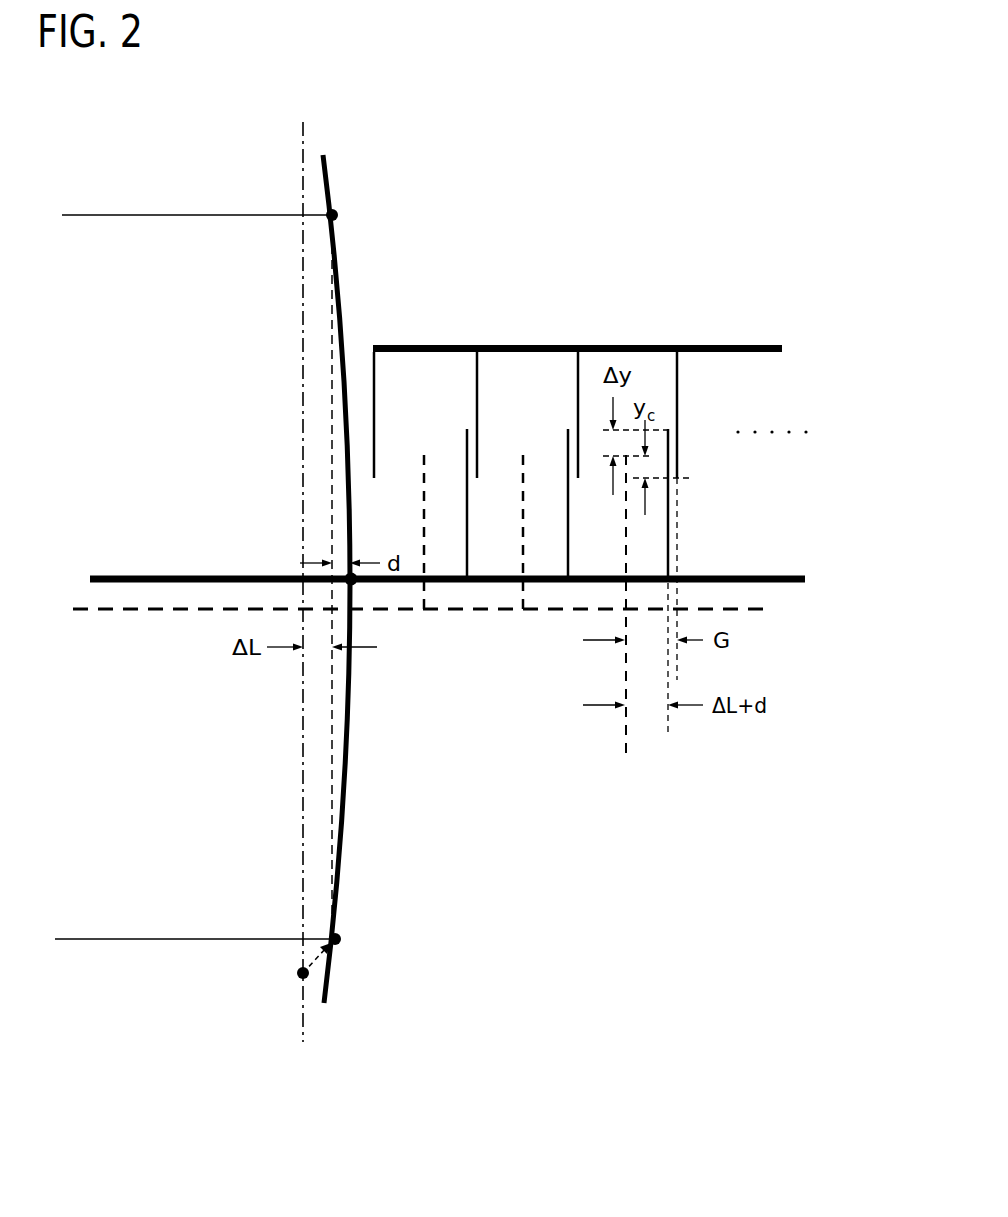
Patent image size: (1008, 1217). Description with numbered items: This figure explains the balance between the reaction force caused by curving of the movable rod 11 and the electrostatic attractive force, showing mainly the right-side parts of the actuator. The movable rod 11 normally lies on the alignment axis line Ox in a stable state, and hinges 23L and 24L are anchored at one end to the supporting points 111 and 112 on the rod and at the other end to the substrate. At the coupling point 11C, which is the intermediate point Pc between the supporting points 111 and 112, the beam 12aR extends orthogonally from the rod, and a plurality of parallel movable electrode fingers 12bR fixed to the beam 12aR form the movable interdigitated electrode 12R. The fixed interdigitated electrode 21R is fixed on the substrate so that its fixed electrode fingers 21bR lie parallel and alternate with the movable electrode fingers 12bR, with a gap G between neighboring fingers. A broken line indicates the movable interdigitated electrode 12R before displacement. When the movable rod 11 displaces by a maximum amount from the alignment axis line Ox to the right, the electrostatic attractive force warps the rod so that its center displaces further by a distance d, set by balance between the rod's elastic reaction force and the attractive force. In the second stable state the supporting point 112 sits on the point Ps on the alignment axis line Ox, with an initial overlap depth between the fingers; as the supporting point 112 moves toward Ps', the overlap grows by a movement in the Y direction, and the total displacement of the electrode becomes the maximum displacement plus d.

The movable rod 11 is at (343, 313).
The supporting point 111 is at (338, 215).
The supporting point 112 is at (297, 977).
The coupling point 11C is at (355, 582).
The movable interdigitated electrode 12R is at (492, 594).
The beam 12aR is at (743, 573).
The movable electrode finger 12bR is at (668, 530).
The fixed interdigitated electrode 21R is at (577, 354).
The fixed electrode finger 21bR is at (678, 420).
The hinge 23L is at (105, 215).
The hinge 24L is at (88, 939).
The alignment axis line Ox is at (302, 172).
The intermediate point Pc is at (415, 728).
The point on the alignment axis line Ps is at (227, 1042).
The displaced position of supporting point Ps' is at (433, 1008).